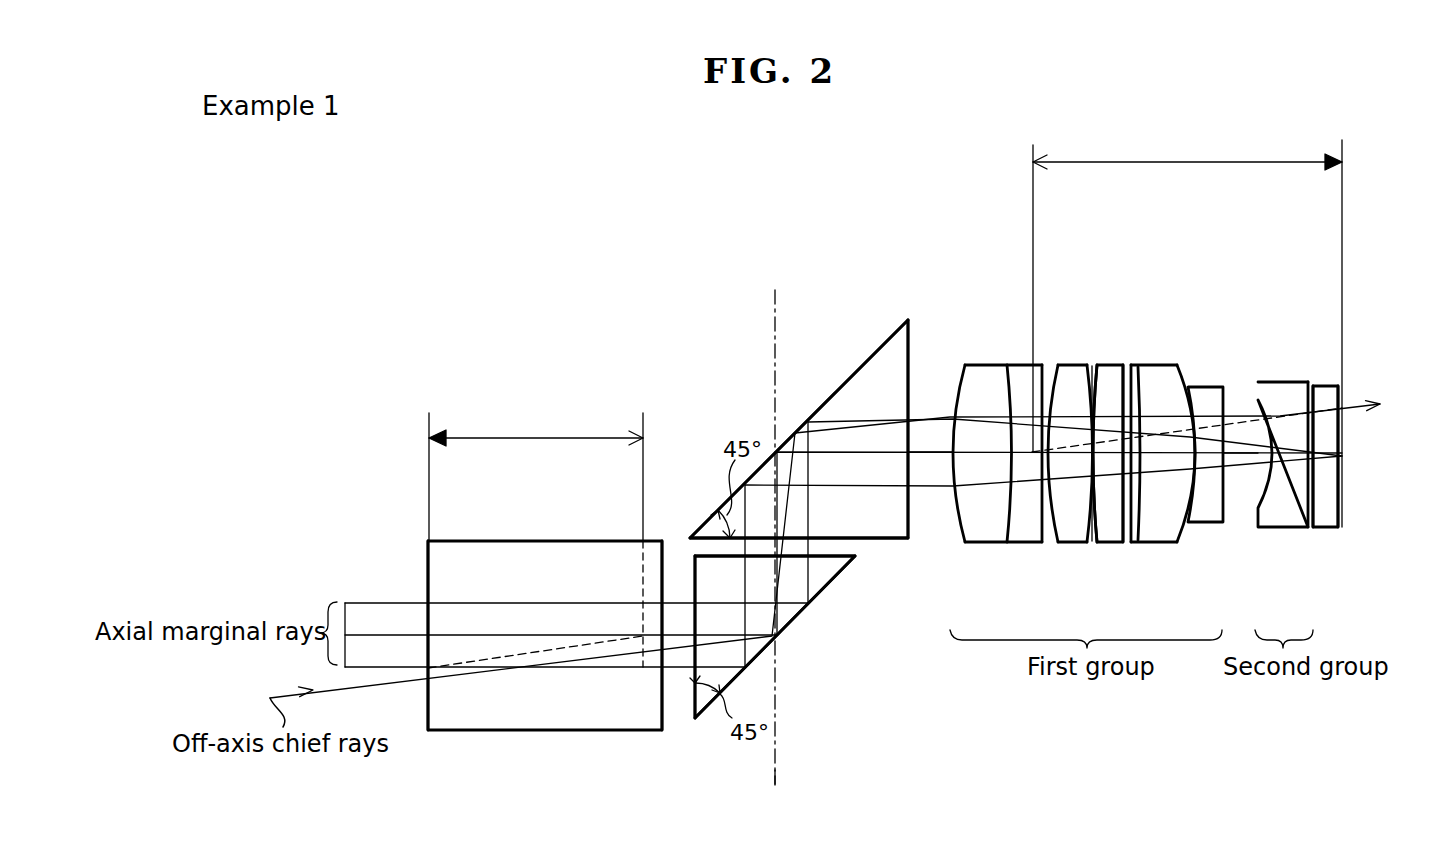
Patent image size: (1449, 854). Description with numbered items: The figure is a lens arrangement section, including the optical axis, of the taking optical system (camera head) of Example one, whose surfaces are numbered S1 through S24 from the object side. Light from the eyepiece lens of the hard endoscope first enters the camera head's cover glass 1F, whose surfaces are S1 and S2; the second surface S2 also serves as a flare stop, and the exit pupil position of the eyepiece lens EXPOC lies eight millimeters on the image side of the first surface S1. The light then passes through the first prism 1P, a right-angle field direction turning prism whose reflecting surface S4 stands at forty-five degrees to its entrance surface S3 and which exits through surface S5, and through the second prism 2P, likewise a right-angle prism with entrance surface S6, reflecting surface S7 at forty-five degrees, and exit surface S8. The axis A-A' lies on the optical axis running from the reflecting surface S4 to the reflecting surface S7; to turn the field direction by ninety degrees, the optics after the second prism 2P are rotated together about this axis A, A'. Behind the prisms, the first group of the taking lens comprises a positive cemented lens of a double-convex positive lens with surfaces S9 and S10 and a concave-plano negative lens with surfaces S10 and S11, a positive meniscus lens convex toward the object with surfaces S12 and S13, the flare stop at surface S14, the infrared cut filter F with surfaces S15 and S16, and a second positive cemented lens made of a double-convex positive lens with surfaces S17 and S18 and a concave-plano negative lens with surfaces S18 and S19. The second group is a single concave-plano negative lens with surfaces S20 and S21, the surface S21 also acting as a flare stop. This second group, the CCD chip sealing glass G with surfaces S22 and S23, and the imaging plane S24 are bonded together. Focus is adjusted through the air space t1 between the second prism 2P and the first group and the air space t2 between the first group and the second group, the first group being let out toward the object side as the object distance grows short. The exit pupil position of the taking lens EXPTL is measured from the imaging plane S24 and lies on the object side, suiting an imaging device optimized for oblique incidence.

The cover glass 1F is at (537, 712).
The first prism 1P is at (793, 612).
The second prism 2P is at (874, 380).
The first surface S1 is at (427, 710).
The second surface S2 is at (663, 712).
The entrance surface S3 is at (695, 712).
The reflecting surface S4 is at (788, 625).
The exit surface of first prism S5 is at (843, 553).
The entrance surface S6 is at (712, 542).
The reflecting surface S7 is at (822, 403).
The exit surface of second prism S8 is at (912, 345).
The object-side surface of double-convex positive lens S9 is at (966, 368).
The cemented surface S10 is at (1010, 368).
The plano surface of concave-plano negative lens S11 is at (1042, 365).
The object-side surface of positive meniscus lens S12 is at (1060, 365).
The image-side surface of positive meniscus lens S13 is at (1087, 500).
The flare stop surface S14 is at (1091, 365).
The object-side surface of infrared cut filter S15 is at (1097, 500).
The image-side surface of infrared cut filter S16 is at (1130, 390).
The object-side surface of double-convex positive lens S17 is at (1146, 363).
The cemented surface S18 is at (1177, 363).
The plano surface of concave-plano negative lens S19 is at (1222, 388).
The object-side surface of second group lens S20 is at (1262, 383).
The second surface of second group lens S21 is at (1305, 505).
The object-side surface of sealing glass S22 is at (1318, 505).
The image-side surface of sealing glass S23 is at (1338, 390).
The imaging plane S24 is at (1342, 497).
The infrared cut filter F is at (1110, 378).
The CCD chip sealing glass G is at (1322, 392).
The focus adjustment spacing t1 is at (932, 458).
The focus adjustment spacing t2 is at (1242, 456).
The rotation axis end A is at (775, 522).
The rotation axis end A' is at (778, 786).
The exit pupil position of the eyepiece lens EXPOC is at (536, 537).
The exit pupil position of the taking lens EXPTL is at (1187, 291).